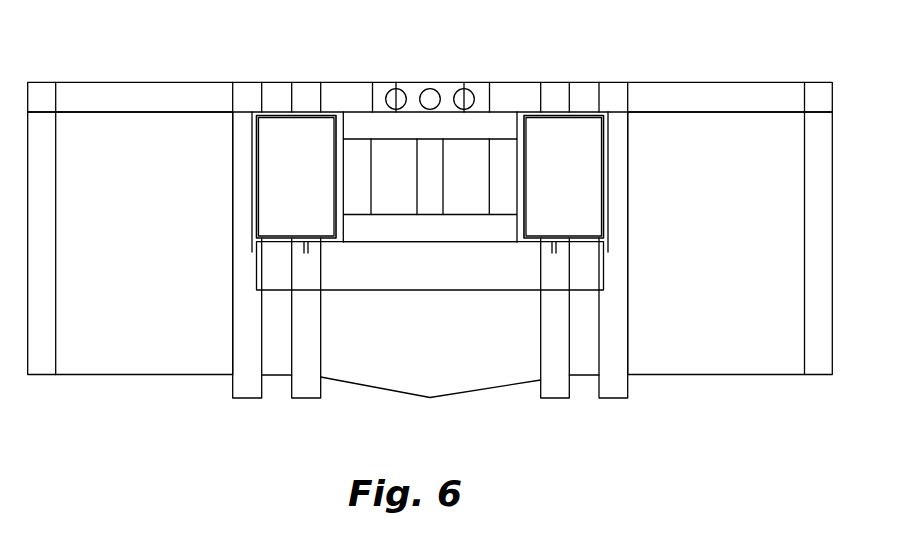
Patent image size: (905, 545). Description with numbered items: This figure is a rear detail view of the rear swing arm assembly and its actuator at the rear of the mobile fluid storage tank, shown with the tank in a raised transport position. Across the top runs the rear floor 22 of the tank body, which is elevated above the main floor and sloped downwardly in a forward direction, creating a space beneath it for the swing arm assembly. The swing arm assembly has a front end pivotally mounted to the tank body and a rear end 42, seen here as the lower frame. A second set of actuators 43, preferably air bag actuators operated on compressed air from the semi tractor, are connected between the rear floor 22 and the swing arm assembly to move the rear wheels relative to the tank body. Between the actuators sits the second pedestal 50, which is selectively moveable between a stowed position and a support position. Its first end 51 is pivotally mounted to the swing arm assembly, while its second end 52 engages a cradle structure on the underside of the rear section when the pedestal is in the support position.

The rear floor 22 is at (185, 97).
The rear end 42 is at (475, 275).
The second set of actuators 43 is at (279, 128).
The second pedestal 50 is at (438, 132).
The first end 51 is at (428, 230).
The second end 52 is at (388, 126).